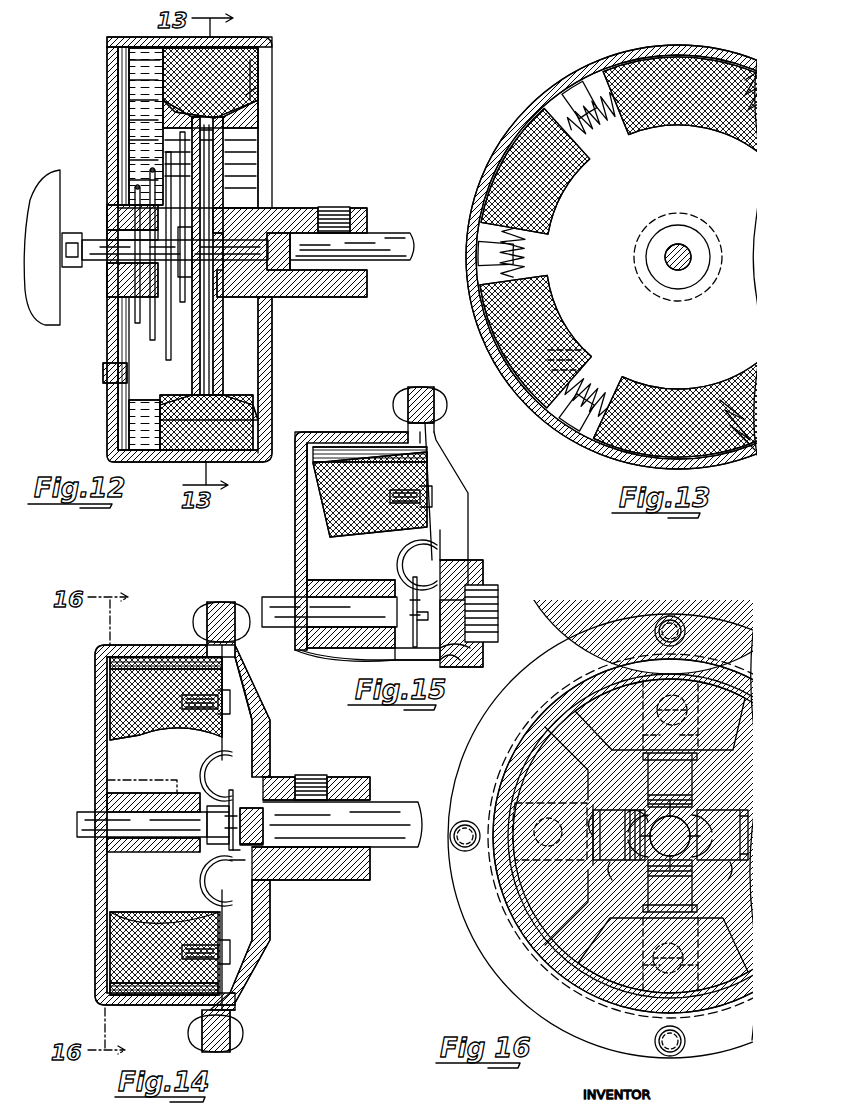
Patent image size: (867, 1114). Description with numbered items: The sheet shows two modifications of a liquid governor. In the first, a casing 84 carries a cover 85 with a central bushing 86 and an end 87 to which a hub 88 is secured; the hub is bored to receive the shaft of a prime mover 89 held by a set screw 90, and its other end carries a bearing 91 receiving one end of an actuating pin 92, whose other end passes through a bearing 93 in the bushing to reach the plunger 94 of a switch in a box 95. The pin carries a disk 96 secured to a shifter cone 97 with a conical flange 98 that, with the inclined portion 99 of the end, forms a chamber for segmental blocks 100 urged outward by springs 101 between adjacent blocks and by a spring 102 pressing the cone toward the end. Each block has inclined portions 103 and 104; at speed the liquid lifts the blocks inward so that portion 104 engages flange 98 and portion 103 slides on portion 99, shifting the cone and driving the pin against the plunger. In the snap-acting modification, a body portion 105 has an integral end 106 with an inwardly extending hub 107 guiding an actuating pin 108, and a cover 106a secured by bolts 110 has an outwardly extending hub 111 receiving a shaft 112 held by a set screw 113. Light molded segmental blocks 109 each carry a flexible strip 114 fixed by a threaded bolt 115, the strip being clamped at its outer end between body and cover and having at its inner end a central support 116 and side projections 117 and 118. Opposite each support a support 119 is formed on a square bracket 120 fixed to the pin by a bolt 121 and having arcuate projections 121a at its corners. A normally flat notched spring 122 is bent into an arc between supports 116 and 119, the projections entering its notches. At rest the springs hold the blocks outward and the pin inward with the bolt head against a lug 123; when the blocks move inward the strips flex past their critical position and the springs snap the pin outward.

In FIG. 12, the casing 84 is at (272, 45).
In FIG. 12, the cover 85 is at (117, 82).
In FIG. 12, the central bushing 86 is at (107, 202).
In FIG. 12, the end 87 is at (226, 360).
In FIG. 12, the hub 88 is at (301, 208).
In FIG. 12, the prime mover 89 is at (396, 235).
In FIG. 12, the set screw 90 is at (338, 208).
In FIG. 12, the bearing 91 is at (271, 207).
In FIG. 13, the bearing 91 is at (692, 250).
In FIG. 12, the actuating pin 92 is at (92, 262).
In FIG. 13, the actuating pin 92 is at (686, 266).
In FIG. 12, the bearing 93 is at (105, 232).
In FIG. 12, the plunger 94 is at (72, 270).
In FIG. 12, the box 95 is at (45, 327).
In FIG. 12, the disk 96 is at (225, 200).
In FIG. 12, the shifter cone 97 is at (180, 165).
In FIG. 12, the conically-shaped flange 98 is at (160, 96).
In FIG. 12, the outwardly inclined portion 99 is at (258, 88).
In FIG. 12, the segmental blocks 100 is at (258, 65).
In FIG. 13, the segmental blocks 100 is at (660, 122).
In FIG. 13, the springs 101 is at (582, 120).
In FIG. 12, the spring 102 is at (150, 170).
In FIG. 12, the inclined portion 103 is at (232, 118).
In FIG. 12, the inclined portion 104 is at (128, 110).
In FIG. 14, the body portion 105 is at (162, 632).
In FIG. 16, the body portion 105 is at (490, 942).
In FIG. 14, the end 106 is at (95, 720).
In FIG. 14, the cover 106a is at (267, 706).
In FIG. 15, the inwardly extending hub 107 is at (366, 580).
In FIG. 14, the inwardly extending hub 107 is at (147, 792).
In FIG. 16, the inwardly extending hub 107 is at (670, 780).
In FIG. 15, the actuating pin 108 is at (268, 596).
In FIG. 14, the actuating pin 108 is at (80, 812).
In FIG. 16, the actuating pin 108 is at (691, 836).
In FIG. 15, the segmental blocks 109 is at (362, 455).
In FIG. 14, the segmental blocks 109 is at (118, 688).
In FIG. 16, the segmental blocks 109 is at (622, 724).
In FIG. 15, the bolts 110 is at (430, 473).
In FIG. 14, the bolts 110 is at (212, 605).
In FIG. 16, the bolts 110 is at (682, 628).
In FIG. 14, the outwardly extending hub 111 is at (358, 777).
In FIG. 15, the shaft 112 is at (492, 600).
In FIG. 14, the shaft 112 is at (408, 802).
In FIG. 15, the set screw 113 is at (470, 566).
In FIG. 14, the set screw 113 is at (317, 777).
In FIG. 15, the strip 114 is at (427, 468).
In FIG. 14, the strip 114 is at (225, 678).
In FIG. 16, the strip 114 is at (700, 732).
In FIG. 15, the threaded bolt 115 is at (430, 492).
In FIG. 14, the threaded bolt 115 is at (232, 692).
In FIG. 16, the threaded bolt 115 is at (688, 710).
In FIG. 16, the central support 116 is at (590, 815).
In FIG. 16, the side projection 117 is at (598, 805).
In FIG. 16, the side projection 118 is at (619, 835).
In FIG. 16, the support 119 is at (628, 812).
In FIG. 15, the bracket 120 is at (462, 648).
In FIG. 14, the bracket 120 is at (236, 852).
In FIG. 16, the bracket 120 is at (670, 886).
In FIG. 15, the bolt 121 is at (418, 590).
In FIG. 14, the bolt 121 is at (266, 814).
In FIG. 16, the arcuate-shaped projection 121a is at (696, 816).
In FIG. 15, the spring 122 is at (400, 556).
In FIG. 14, the spring 122 is at (204, 757).
In FIG. 16, the spring 122 is at (595, 863).
In FIG. 14, the lug 123 is at (265, 834).